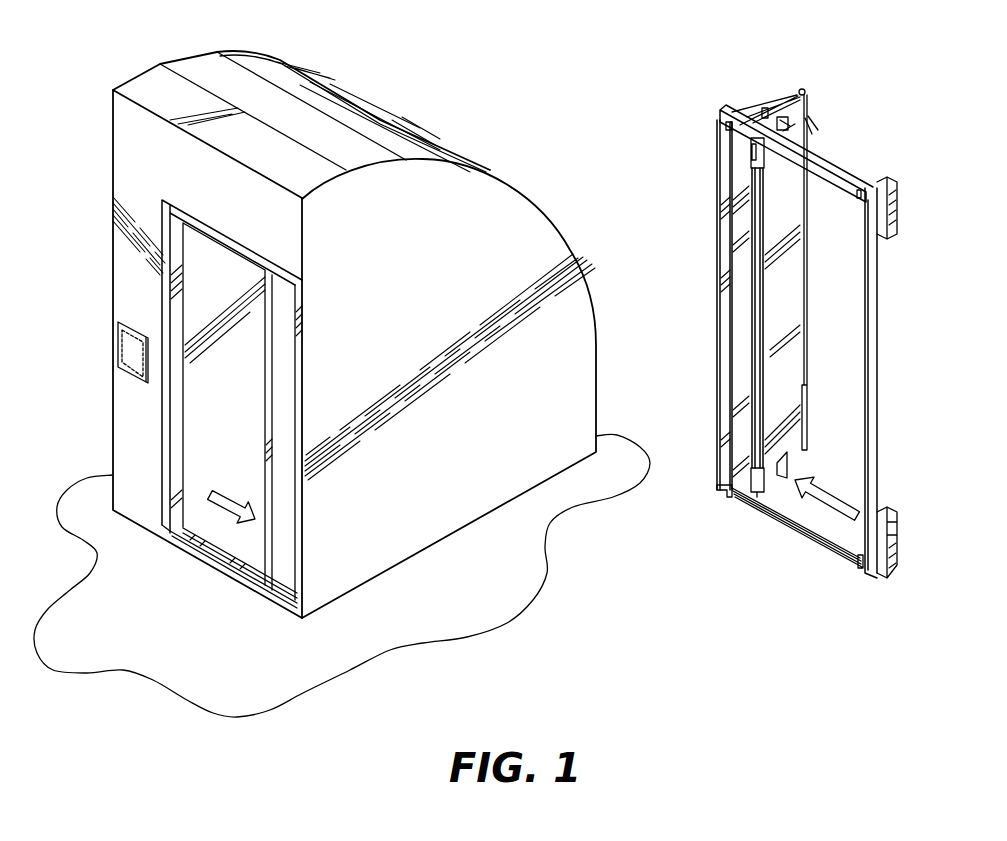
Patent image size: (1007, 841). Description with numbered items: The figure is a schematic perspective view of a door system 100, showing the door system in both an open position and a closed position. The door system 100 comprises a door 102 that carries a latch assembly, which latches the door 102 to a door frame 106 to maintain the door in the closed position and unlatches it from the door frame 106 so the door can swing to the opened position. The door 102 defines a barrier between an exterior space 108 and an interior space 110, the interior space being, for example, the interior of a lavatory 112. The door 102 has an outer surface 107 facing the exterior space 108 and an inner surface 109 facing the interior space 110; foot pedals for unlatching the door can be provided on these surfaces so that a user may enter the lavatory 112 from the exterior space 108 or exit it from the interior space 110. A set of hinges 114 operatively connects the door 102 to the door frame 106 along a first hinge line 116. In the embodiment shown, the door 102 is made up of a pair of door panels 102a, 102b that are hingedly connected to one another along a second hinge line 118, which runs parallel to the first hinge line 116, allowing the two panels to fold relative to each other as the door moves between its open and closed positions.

The door system 100 is at (82, 100).
The door 102 is at (287, 552).
The door panel 102a is at (804, 243).
The door panel 102b is at (741, 266).
The door frame 106 is at (847, 178).
The outer surface 107 is at (742, 323).
The exterior space 108 is at (30, 292).
The inner surface 109 is at (797, 350).
The interior space 110 is at (249, 378).
The lavatory 112 is at (363, 126).
The hinges 114 is at (720, 118).
The first hinge line 116 is at (717, 180).
The second hinge line 118 is at (822, 134).